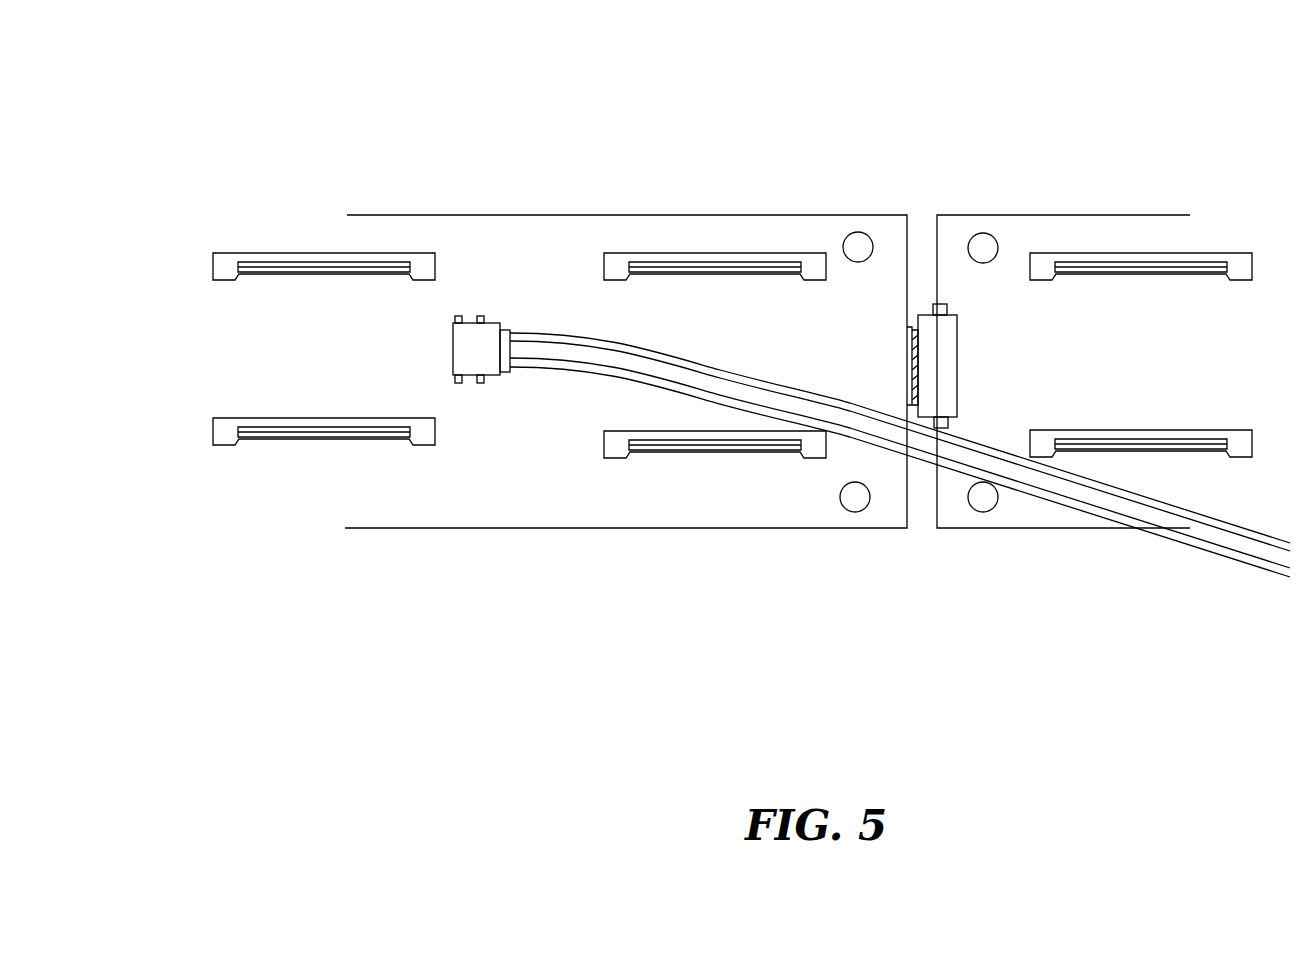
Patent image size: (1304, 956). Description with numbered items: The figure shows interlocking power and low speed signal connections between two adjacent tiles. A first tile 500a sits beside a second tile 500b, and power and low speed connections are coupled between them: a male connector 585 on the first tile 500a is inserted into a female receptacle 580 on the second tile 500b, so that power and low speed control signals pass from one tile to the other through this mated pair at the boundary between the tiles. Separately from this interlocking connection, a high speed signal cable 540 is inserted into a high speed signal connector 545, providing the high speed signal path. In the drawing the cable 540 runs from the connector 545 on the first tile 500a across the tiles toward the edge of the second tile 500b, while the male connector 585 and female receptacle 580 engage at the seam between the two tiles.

The first tile 500a is at (507, 220).
The second tile 500b is at (1057, 219).
The high speed signal cable 540 is at (1217, 543).
The high speed signal connector 545 is at (484, 360).
The female receptacle 580 is at (930, 325).
The male connector 585 is at (908, 360).